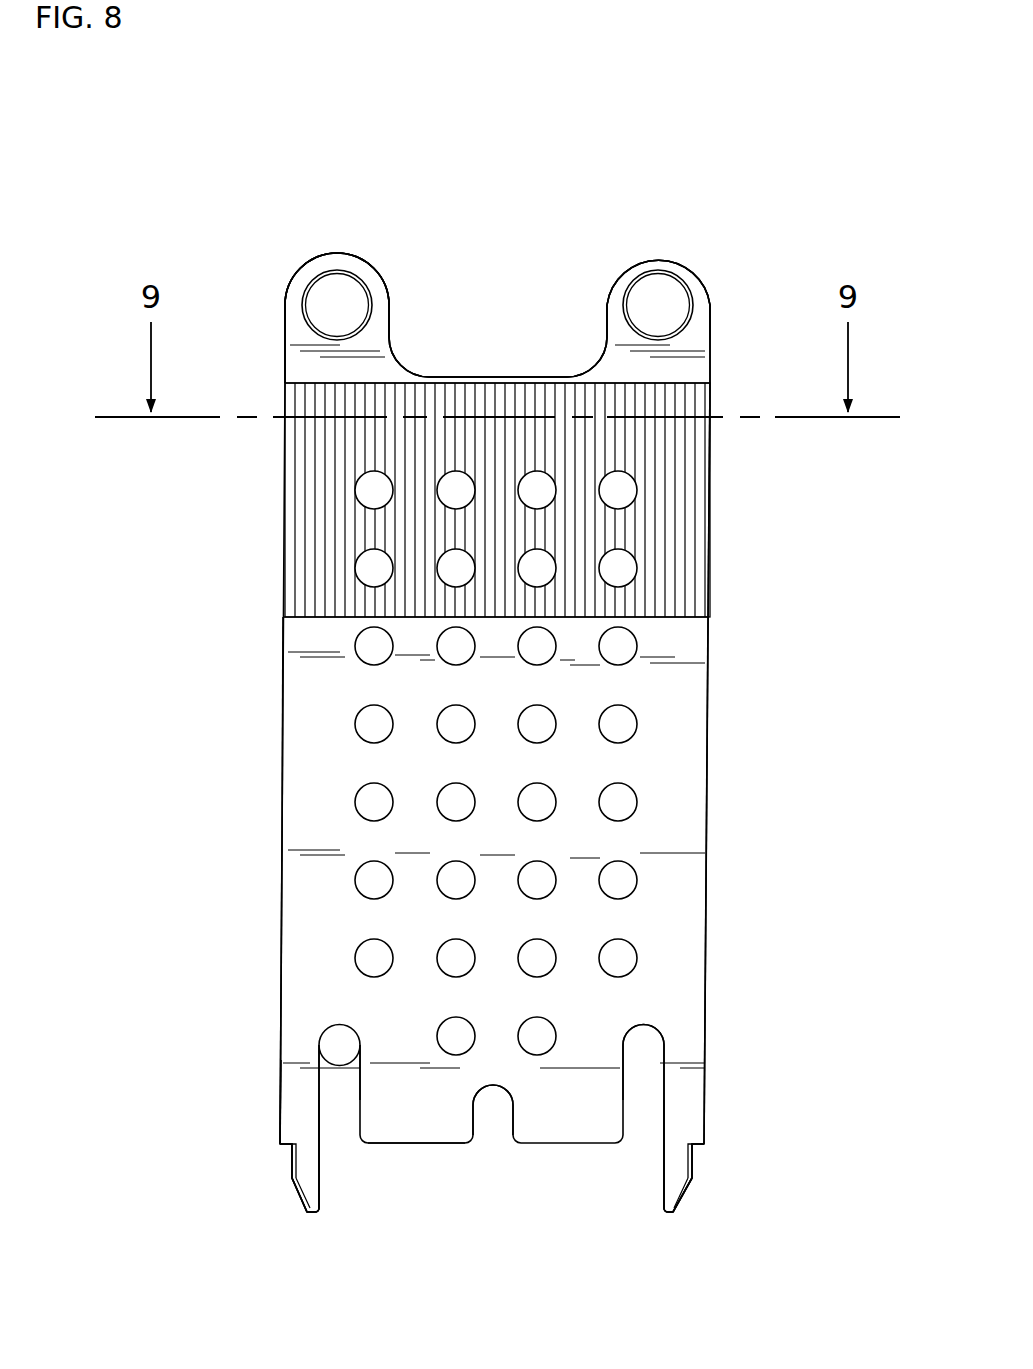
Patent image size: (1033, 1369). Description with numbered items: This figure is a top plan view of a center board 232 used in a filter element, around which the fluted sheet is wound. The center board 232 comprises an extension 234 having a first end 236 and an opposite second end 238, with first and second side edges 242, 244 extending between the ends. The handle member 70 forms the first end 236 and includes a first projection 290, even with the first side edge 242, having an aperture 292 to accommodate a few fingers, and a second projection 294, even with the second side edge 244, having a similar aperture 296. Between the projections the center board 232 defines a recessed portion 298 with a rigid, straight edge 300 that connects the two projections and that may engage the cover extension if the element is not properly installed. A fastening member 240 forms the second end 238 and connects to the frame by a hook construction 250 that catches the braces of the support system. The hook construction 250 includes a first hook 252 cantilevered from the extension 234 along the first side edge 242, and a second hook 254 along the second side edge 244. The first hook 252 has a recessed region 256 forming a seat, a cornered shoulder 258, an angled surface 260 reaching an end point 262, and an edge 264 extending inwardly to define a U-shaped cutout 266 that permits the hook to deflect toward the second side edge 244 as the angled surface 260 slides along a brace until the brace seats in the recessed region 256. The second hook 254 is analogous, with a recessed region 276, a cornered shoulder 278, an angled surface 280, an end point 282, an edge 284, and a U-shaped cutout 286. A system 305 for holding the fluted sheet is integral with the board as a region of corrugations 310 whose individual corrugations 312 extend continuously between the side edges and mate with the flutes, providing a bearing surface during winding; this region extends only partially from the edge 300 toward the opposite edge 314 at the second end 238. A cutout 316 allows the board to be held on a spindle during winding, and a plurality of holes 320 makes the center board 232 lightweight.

The handle member 70 is at (829, 249).
The center board 232 is at (363, 227).
The extension 234 is at (283, 822).
The first end 236 is at (288, 308).
The second end 238 is at (280, 1118).
The fastening member 240 is at (735, 1164).
The first side edge 242 is at (283, 948).
The second side edge 244 is at (710, 985).
The hook construction 250 is at (245, 1165).
The first hook 252 is at (318, 1182).
The second hook 254 is at (664, 1190).
The recessed region 256 is at (283, 1150).
The cornered shoulder 258 is at (287, 1178).
The angled surface 260 is at (298, 1200).
The end point 262 is at (306, 1210).
The edge 264 is at (318, 1152).
The cutout 266 is at (360, 1048).
The recessed region 276 is at (700, 1150).
The cornered shoulder 278 is at (698, 1180).
The angled surface 280 is at (688, 1196).
The end point 282 is at (670, 1208).
The edge 284 is at (664, 1167).
The U-shaped cutout 286 is at (648, 1027).
The first projection 290 is at (378, 280).
The aperture 292 is at (366, 301).
The second projection 294 is at (656, 257).
The aperture 296 is at (692, 301).
The recessed portion 298 is at (459, 377).
The edge 300 is at (538, 377).
The system 305 is at (272, 525).
The region of corrugations 310 is at (740, 490).
The corrugations 312 is at (710, 575).
The opposite edge 314 is at (445, 1145).
The cutout 316 is at (510, 1122).
The holes 320 is at (457, 798).